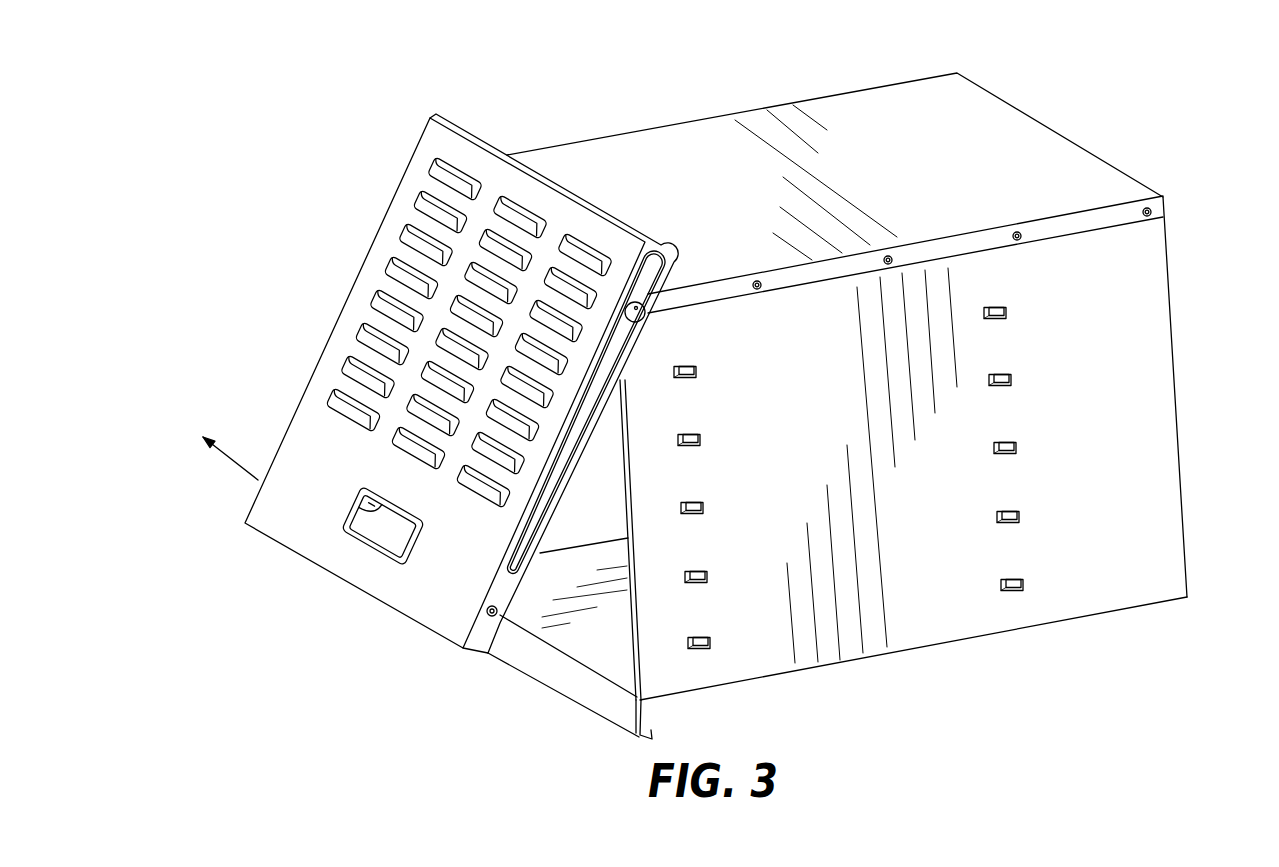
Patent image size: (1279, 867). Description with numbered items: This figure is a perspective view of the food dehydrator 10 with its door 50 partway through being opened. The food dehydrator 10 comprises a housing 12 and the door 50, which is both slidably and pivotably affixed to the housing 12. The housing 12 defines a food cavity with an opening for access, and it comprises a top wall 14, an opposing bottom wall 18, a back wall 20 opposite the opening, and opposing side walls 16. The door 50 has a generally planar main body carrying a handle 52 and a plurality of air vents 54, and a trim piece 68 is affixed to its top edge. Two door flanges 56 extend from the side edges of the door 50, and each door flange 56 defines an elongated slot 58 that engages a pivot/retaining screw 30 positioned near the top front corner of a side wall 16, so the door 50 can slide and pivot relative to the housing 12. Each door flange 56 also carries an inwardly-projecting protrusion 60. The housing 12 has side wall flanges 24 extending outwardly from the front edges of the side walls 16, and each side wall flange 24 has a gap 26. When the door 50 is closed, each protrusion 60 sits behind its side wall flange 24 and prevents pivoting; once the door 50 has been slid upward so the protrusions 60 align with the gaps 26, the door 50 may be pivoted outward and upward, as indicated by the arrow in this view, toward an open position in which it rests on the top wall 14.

The food dehydrator 10 is at (276, 91).
The housing 12 is at (1167, 260).
The top wall 14 is at (950, 102).
The side wall 16 is at (1190, 450).
The bottom wall 18 is at (610, 662).
The back wall 20 is at (1187, 350).
The side wall flange 24 is at (630, 497).
The gap 26 is at (637, 650).
The pivot/retaining screw 30 is at (656, 250).
The door 50 is at (280, 520).
The handle 52 is at (377, 537).
The air vents 54 is at (395, 310).
The door flange 56 is at (477, 647).
The elongated slot 58 is at (537, 540).
The protrusion 60 is at (497, 607).
The trim piece 68 is at (484, 143).